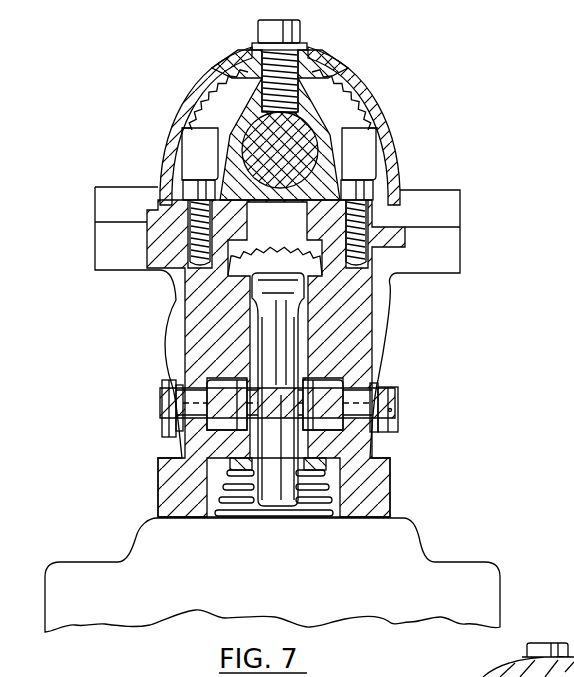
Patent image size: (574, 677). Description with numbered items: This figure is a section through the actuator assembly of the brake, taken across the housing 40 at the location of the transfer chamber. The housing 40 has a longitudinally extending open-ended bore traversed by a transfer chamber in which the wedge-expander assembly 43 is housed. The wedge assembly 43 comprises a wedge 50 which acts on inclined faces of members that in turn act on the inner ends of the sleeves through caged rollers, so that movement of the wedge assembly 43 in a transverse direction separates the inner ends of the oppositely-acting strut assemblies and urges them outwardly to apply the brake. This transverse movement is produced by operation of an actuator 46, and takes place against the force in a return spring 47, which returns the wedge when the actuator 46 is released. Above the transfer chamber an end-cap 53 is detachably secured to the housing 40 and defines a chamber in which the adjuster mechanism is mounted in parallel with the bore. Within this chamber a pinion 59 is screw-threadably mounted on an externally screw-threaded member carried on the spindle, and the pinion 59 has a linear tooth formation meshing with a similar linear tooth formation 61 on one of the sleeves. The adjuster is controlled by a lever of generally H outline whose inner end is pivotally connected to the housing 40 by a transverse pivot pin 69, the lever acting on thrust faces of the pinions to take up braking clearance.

The housing 40 is at (340, 343).
The wedge-expander assembly 43 is at (275, 392).
The actuator 46 is at (448, 583).
The return spring 47 is at (222, 480).
The wedge 50 is at (272, 325).
The end-cap 53 is at (383, 110).
The pinion 59 is at (237, 263).
The linear tooth formation 61 is at (233, 277).
The transverse pivot pin 69 is at (398, 393).